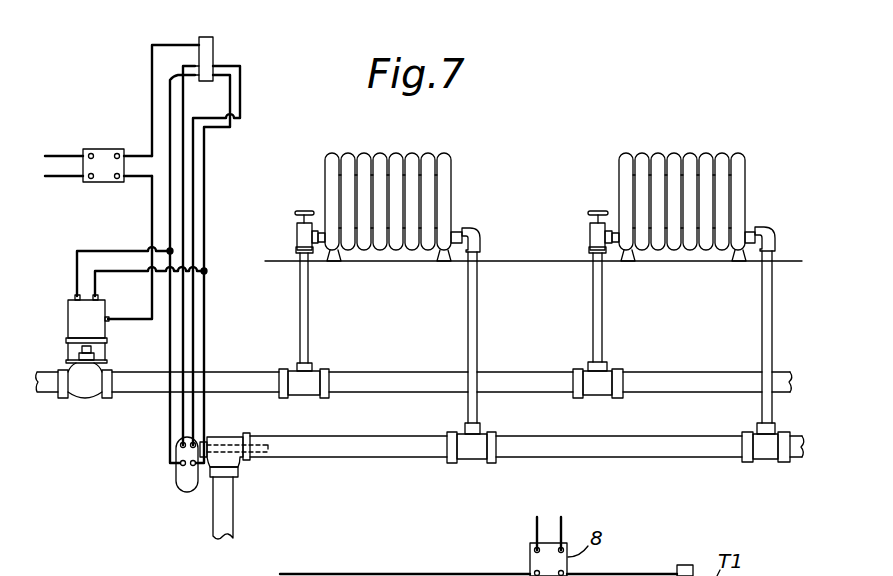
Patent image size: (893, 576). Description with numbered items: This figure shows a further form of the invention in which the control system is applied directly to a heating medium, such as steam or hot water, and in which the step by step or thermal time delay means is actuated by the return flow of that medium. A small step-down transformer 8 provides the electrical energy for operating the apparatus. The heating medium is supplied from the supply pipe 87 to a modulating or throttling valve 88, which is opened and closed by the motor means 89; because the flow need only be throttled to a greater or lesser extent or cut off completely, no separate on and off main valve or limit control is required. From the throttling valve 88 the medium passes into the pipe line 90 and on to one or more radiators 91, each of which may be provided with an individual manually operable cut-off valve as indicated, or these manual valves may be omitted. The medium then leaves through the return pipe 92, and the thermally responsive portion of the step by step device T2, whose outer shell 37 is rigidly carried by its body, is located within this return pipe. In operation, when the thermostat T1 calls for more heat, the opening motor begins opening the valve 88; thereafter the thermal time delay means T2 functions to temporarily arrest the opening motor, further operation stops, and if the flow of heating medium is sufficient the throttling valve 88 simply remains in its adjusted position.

The thermostat T1 is at (225, 57).
The step-down transformer 8 is at (104, 147).
The motor means 89 is at (66, 312).
The supply pipe 87 is at (44, 396).
The throttling valve 88 is at (87, 395).
The pipe line 90 is at (372, 371).
The radiators 91 is at (453, 205).
The return pipe 92 is at (364, 458).
The outer shell 37 is at (257, 458).
The thermally actuated time delay device T2 is at (174, 481).